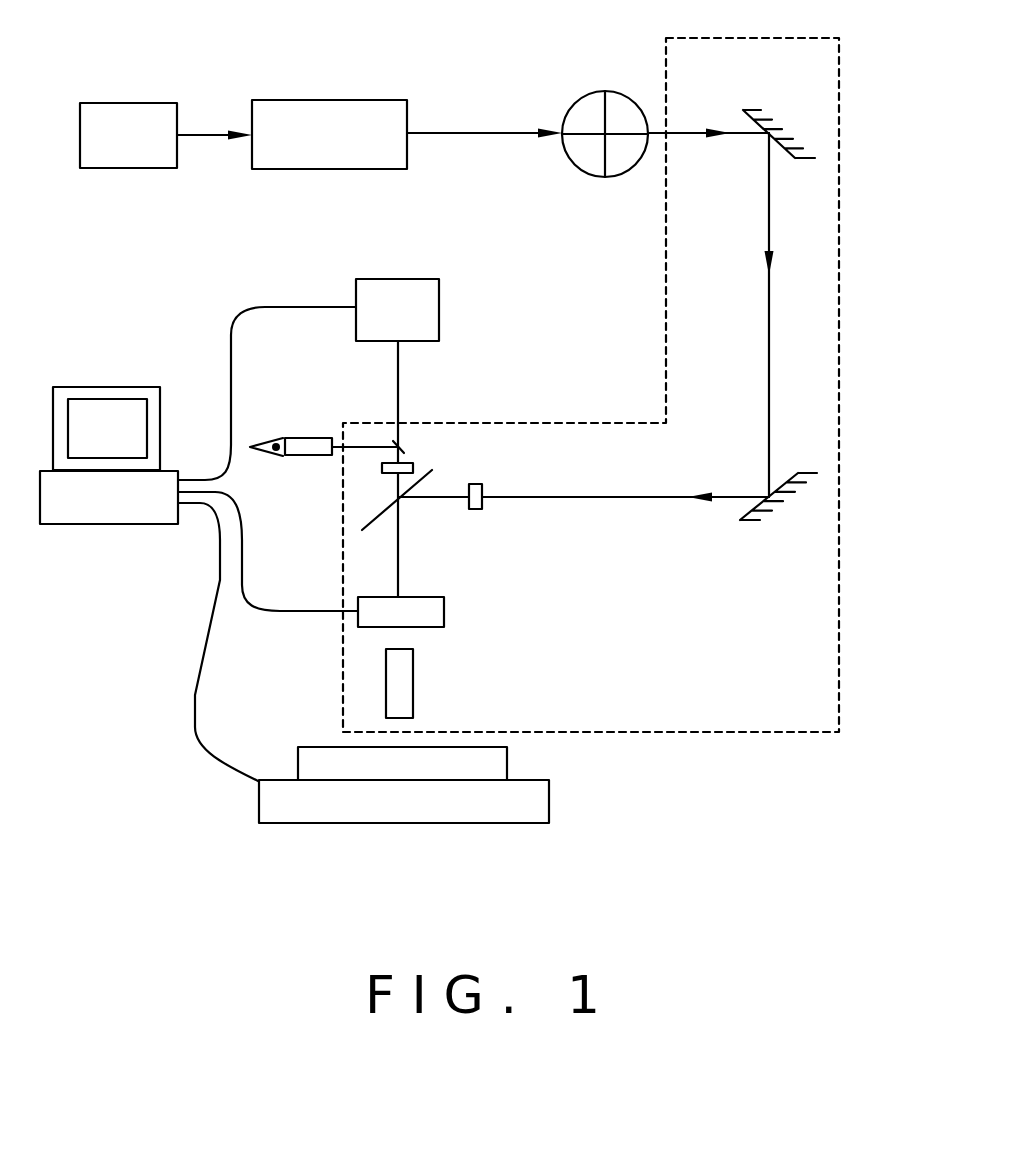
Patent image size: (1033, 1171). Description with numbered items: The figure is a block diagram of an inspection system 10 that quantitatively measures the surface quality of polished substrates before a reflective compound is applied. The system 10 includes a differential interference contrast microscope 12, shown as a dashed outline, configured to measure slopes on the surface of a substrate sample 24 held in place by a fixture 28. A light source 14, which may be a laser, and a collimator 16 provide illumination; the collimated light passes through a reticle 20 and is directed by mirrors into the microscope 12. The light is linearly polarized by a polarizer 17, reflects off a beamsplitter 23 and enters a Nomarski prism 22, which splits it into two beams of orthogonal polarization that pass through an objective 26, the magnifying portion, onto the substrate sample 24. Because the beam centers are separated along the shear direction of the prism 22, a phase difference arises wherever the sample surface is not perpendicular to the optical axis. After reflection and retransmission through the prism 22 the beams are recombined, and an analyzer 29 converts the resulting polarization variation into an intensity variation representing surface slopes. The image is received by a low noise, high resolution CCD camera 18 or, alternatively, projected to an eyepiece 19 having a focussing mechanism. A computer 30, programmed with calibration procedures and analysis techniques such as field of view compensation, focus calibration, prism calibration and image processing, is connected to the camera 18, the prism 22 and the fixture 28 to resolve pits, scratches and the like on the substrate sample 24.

The inspection system 10 is at (872, 189).
The differential interference contrast microscope 12 is at (845, 78).
The light source 14 is at (147, 103).
The collimator 16 is at (360, 100).
The polarizer 17 is at (475, 509).
The charge coupled device (CCD) camera 18 is at (439, 288).
The eyepiece 19 is at (302, 438).
The reticle 20 is at (588, 152).
The Nomarski prism 22 is at (444, 607).
The beamsplitter 23 is at (424, 472).
The substrate sample 24 is at (507, 757).
The objective 26 is at (386, 676).
The fixture 28 is at (549, 800).
The analyzer 29 is at (378, 468).
The computer 30 is at (88, 524).